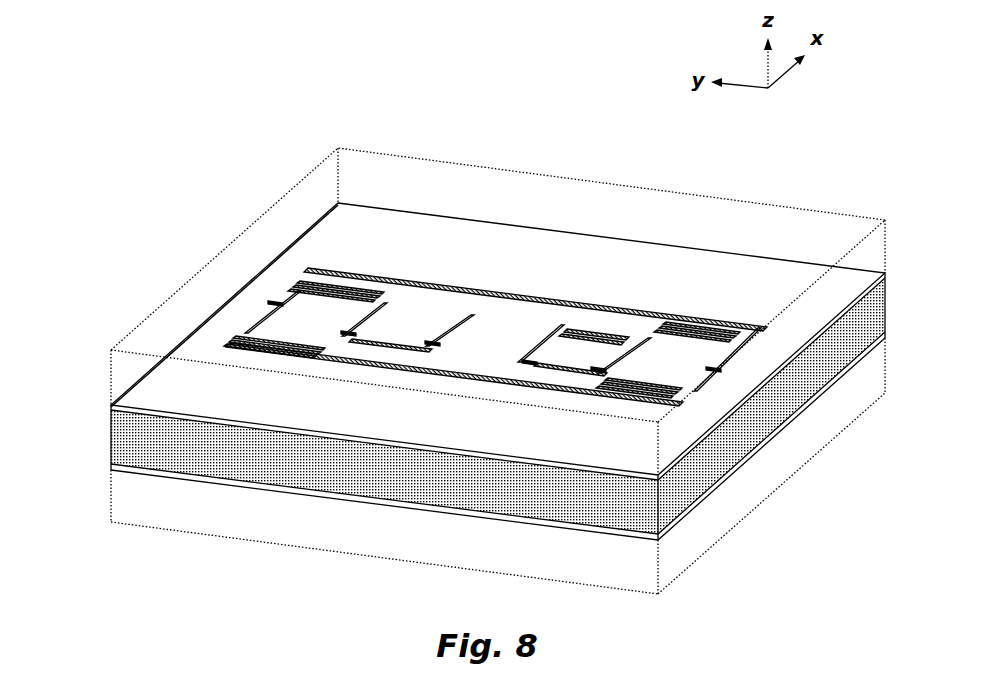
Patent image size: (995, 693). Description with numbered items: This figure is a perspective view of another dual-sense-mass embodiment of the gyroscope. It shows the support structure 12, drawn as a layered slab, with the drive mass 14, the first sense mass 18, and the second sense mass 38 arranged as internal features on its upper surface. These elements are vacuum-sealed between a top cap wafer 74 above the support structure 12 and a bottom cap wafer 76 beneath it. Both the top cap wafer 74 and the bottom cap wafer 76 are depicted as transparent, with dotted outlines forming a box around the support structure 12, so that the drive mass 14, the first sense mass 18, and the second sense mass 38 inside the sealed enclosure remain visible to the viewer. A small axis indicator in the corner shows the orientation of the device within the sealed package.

The support structure 12 is at (688, 280).
The drive mass 14 is at (495, 335).
The first sense mass 18 is at (403, 327).
The second sense mass 38 is at (577, 352).
The top cap wafer 74 is at (425, 157).
The bottom cap wafer 76 is at (322, 550).